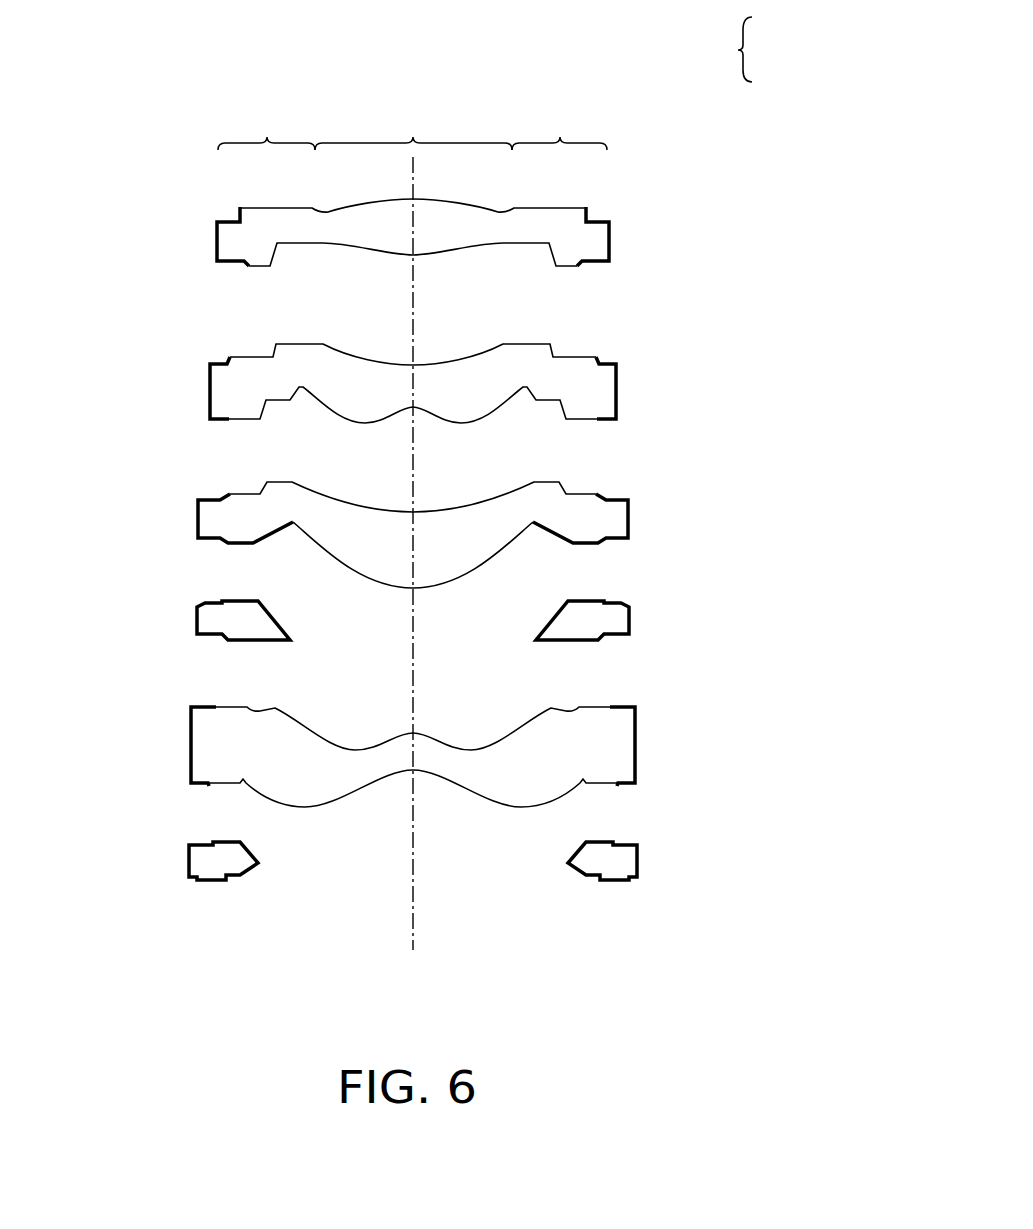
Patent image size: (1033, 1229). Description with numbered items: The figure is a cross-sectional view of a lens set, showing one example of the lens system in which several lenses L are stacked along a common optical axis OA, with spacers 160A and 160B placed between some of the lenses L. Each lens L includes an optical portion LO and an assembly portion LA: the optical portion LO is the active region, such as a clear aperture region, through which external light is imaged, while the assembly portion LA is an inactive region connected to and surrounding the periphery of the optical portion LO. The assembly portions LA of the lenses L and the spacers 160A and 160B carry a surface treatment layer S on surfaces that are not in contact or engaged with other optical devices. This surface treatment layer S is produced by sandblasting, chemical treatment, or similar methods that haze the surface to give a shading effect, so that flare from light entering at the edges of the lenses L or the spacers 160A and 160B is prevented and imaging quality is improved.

The lens L is at (140, 755).
The assembly portion LA is at (504, 101).
The optical portion LO is at (552, 81).
The spacer 160A is at (215, 623).
The spacer 160B is at (207, 863).
The surface treatment layer S is at (637, 858).
The optical axis OA is at (414, 575).